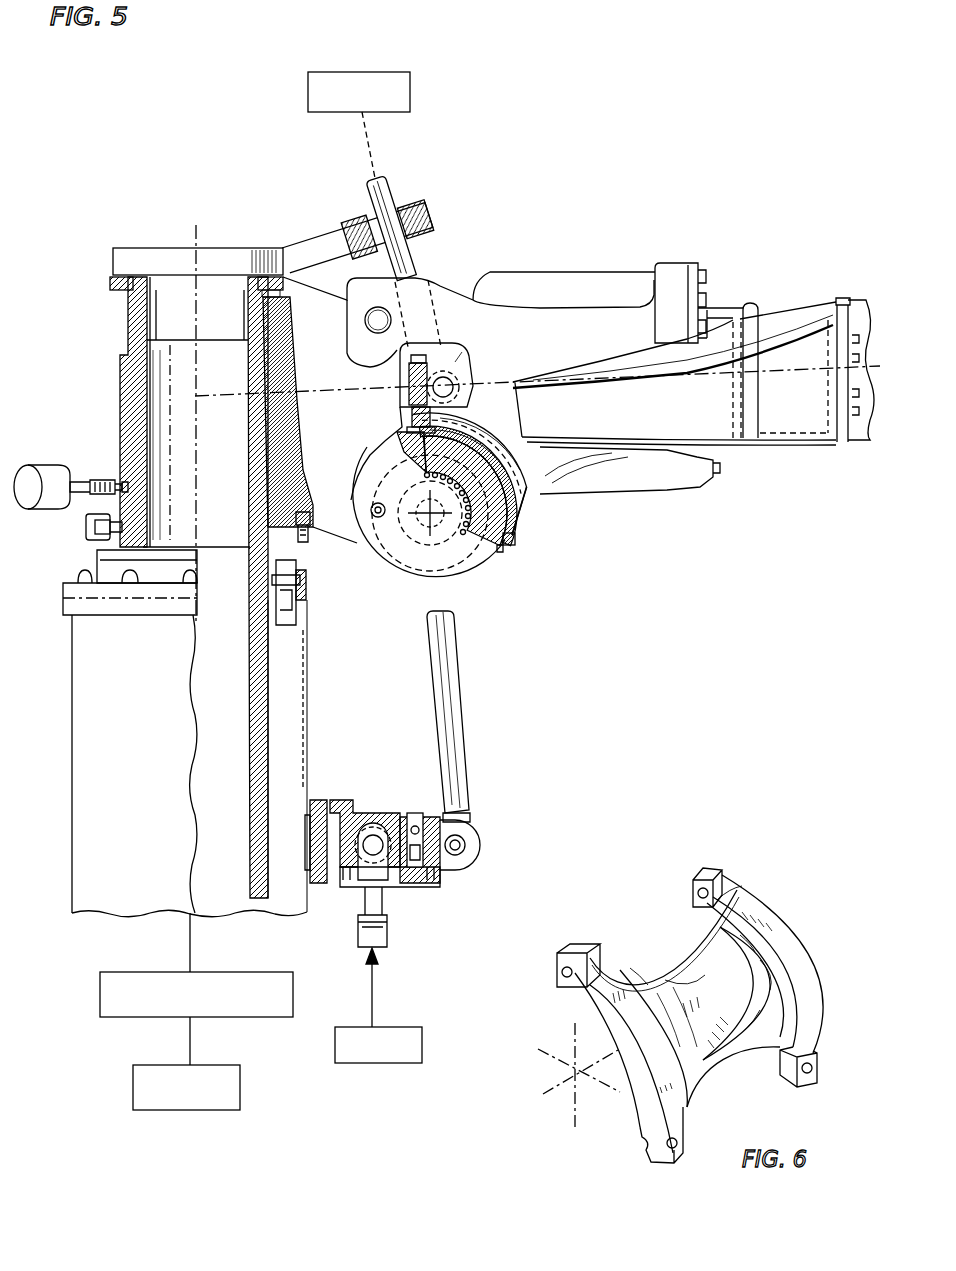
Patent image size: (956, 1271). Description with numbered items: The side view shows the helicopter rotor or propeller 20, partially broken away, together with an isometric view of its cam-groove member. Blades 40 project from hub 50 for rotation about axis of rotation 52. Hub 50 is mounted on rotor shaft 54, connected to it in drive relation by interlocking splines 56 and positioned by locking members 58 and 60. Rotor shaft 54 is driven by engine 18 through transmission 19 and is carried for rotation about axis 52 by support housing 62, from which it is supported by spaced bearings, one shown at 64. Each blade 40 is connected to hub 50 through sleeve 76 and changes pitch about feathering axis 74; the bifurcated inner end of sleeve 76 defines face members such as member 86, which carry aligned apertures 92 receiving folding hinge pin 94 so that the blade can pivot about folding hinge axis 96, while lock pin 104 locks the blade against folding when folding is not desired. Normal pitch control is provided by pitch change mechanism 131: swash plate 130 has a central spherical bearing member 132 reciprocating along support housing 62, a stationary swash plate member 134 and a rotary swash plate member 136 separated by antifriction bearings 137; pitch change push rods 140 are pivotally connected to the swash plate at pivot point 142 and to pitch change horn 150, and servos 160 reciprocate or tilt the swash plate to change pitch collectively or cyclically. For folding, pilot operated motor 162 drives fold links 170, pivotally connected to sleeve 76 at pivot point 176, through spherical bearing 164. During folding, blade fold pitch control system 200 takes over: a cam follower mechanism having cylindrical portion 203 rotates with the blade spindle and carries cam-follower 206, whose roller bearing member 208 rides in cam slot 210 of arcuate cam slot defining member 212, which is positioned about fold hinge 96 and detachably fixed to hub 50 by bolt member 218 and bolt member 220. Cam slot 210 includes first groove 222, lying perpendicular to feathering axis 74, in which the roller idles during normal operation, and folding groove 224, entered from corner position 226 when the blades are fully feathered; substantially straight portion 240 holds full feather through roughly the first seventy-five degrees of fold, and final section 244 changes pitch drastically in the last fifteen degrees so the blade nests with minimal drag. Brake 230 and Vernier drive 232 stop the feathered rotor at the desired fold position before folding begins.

In FIG. 5, the engine 18 is at (133, 1086).
In FIG. 5, the transmission 19 is at (100, 996).
In FIG. 5, the helicopter rotor or propeller 20 is at (535, 182).
In FIG. 5, the blade 40 is at (880, 302).
In FIG. 5, the hub 50 is at (293, 354).
In FIG. 5, the axis of rotation 52 is at (200, 362).
In FIG. 5, the rotor shaft 54 is at (128, 306).
In FIG. 5, the interlocking splines 56 is at (292, 407).
In FIG. 5, the locking member 58 is at (289, 286).
In FIG. 5, the locking member 60 is at (315, 538).
In FIG. 5, the support housing 62 is at (310, 705).
In FIG. 5, the bearing 64 is at (287, 626).
In FIG. 5, the feathering axis 74 is at (792, 376).
In FIG. 5, the sleeve 76 is at (588, 272).
In FIG. 5, the face member 86 is at (347, 331).
In FIG. 5, the aligned apertures 92 is at (410, 535).
In FIG. 5, the folding hinge pin 94 is at (378, 518).
In FIG. 5, the folding hinge axis 96 is at (428, 510).
In FIG. 6, the folding hinge axis 96 is at (550, 1078).
In FIG. 5, the lock pin 104 is at (376, 309).
In FIG. 5, the swash plate 130 is at (375, 821).
In FIG. 5, the pitch change mechanism 131 is at (428, 742).
In FIG. 5, the central spherical bearing member 132 is at (318, 800).
In FIG. 5, the stationary swash plate member 134 is at (352, 806).
In FIG. 5, the rotary swash plate member 136 is at (440, 870).
In FIG. 5, the antifriction bearings 137 is at (416, 815).
In FIG. 5, the pitch change push rod 140 is at (462, 707).
In FIG. 5, the pivot point 142 is at (462, 854).
In FIG. 5, the pitch change horn 150 is at (658, 362).
In FIG. 5, the servo 160 is at (422, 1046).
In FIG. 5, the pilot operated motor 162 is at (380, 72).
In FIG. 5, the spherical bearing 164 is at (387, 228).
In FIG. 5, the fold link 170 is at (424, 203).
In FIG. 5, the pivot point 176 is at (444, 375).
In FIG. 5, the blade fold pitch control system 200 is at (500, 458).
In FIG. 5, the cylindrical portion 203 is at (457, 360).
In FIG. 5, the cam-follower 206 is at (412, 415).
In FIG. 5, the roller bearing member 208 is at (404, 443).
In FIG. 5, the cam slot 210 is at (423, 453).
In FIG. 6, the cam slot 210 is at (680, 960).
In FIG. 5, the cam slot defining member 212 is at (514, 492).
In FIG. 6, the cam slot defining member 212 is at (642, 1112).
In FIG. 5, the bolt member 218 is at (504, 552).
In FIG. 5, the bolt member 220 is at (511, 544).
In FIG. 6, the first groove 222 is at (640, 962).
In FIG. 5, the folding groove 224 is at (490, 446).
In FIG. 6, the folding groove 224 is at (770, 973).
In FIG. 6, the corner position 226 is at (717, 900).
In FIG. 5, the brake 230 is at (86, 531).
In FIG. 5, the Vernier drive 232 is at (56, 468).
In FIG. 5, the portion of folding groove 240 is at (466, 422).
In FIG. 6, the portion of folding groove 240 is at (753, 950).
In FIG. 5, the section of folding groove 244 is at (514, 510).
In FIG. 6, the section of folding groove 244 is at (753, 1032).